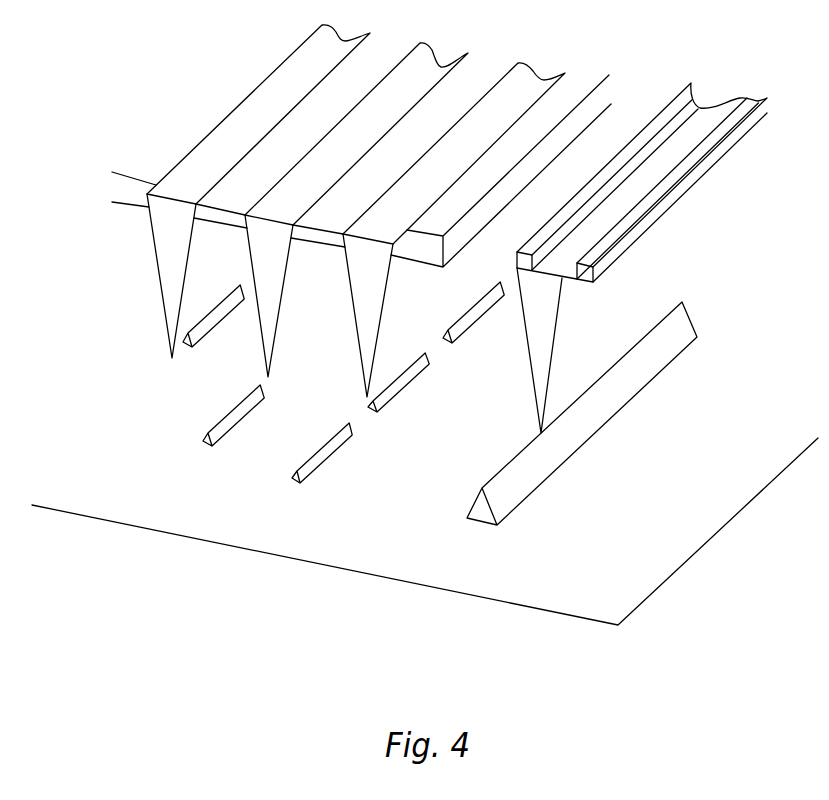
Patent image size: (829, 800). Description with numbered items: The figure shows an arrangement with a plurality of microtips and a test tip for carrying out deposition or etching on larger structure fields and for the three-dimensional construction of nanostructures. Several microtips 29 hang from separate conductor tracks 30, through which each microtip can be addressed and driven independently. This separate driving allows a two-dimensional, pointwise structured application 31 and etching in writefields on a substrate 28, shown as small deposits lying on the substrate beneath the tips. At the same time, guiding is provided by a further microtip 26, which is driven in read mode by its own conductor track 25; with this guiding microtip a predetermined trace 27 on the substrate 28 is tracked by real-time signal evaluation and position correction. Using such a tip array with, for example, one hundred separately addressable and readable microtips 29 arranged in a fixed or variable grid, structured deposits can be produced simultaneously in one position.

The conductor track 25 is at (667, 152).
The microtip 26 is at (552, 328).
The predetermined trace 27 is at (598, 431).
The substrate 28 is at (632, 595).
The microtips 29 is at (365, 300).
The conductor tracks 30 is at (260, 107).
The structured application 31 is at (400, 393).